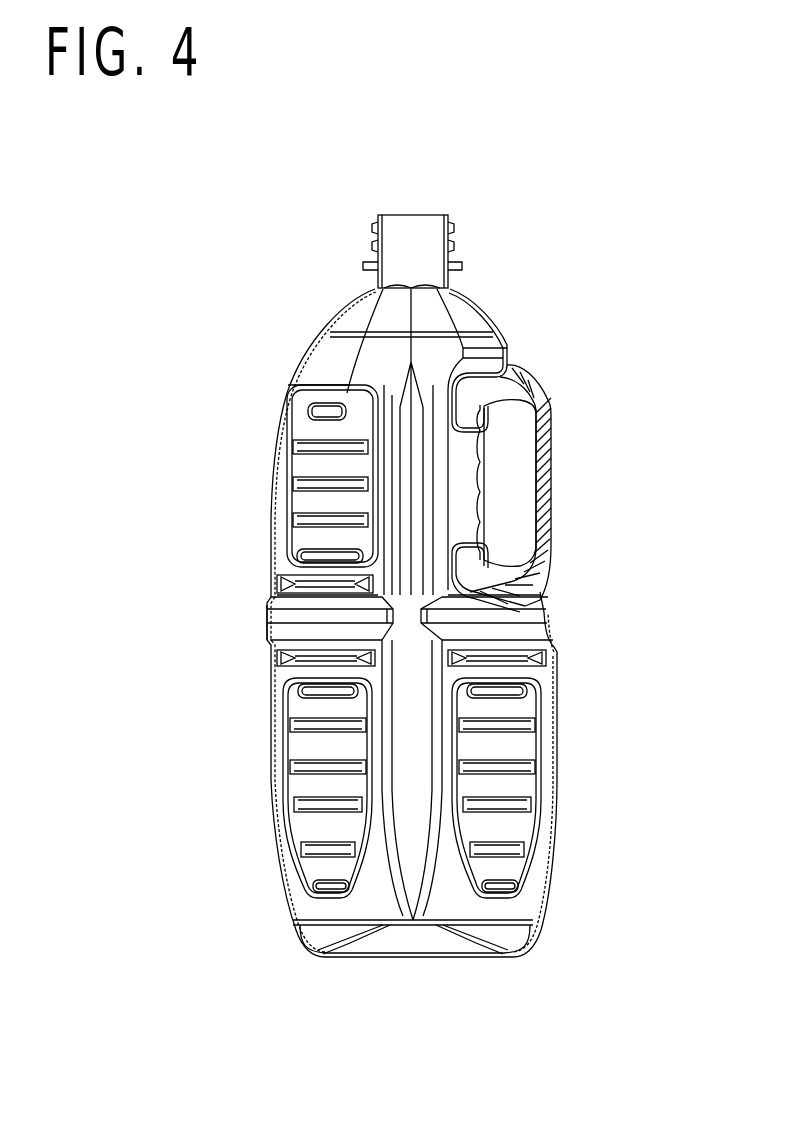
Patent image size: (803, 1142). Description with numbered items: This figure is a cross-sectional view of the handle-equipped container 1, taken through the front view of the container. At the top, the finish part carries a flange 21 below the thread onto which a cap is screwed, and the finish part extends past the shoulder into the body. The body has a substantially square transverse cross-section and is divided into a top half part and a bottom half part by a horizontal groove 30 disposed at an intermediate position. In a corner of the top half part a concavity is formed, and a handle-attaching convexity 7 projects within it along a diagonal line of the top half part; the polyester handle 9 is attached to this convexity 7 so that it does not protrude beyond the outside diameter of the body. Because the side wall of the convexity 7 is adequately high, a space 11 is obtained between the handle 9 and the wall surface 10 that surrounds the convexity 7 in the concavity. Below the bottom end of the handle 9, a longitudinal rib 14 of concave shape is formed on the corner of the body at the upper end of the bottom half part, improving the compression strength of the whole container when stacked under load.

The handle-equipped container 1 is at (412, 623).
The flange 21 is at (363, 268).
The wall surface 10 is at (460, 413).
The space 11 is at (477, 405).
The handle-attaching convexity 7 is at (478, 472).
The polyester handle 9 is at (553, 487).
The horizontal groove 30 is at (282, 617).
The longitudinal rib 14 is at (553, 640).